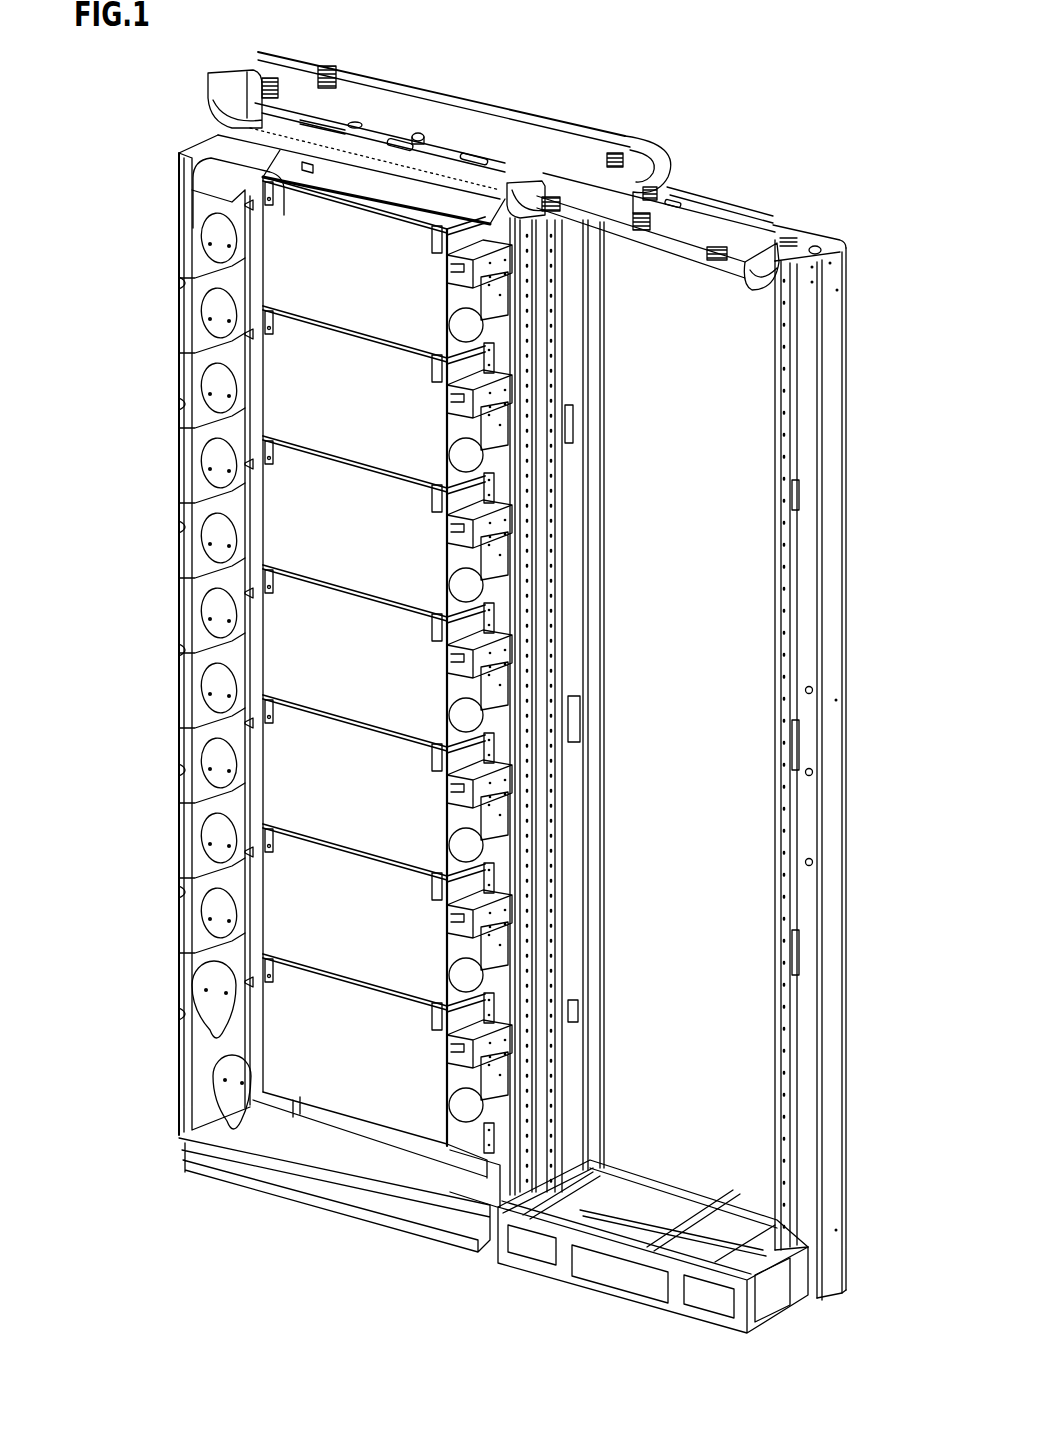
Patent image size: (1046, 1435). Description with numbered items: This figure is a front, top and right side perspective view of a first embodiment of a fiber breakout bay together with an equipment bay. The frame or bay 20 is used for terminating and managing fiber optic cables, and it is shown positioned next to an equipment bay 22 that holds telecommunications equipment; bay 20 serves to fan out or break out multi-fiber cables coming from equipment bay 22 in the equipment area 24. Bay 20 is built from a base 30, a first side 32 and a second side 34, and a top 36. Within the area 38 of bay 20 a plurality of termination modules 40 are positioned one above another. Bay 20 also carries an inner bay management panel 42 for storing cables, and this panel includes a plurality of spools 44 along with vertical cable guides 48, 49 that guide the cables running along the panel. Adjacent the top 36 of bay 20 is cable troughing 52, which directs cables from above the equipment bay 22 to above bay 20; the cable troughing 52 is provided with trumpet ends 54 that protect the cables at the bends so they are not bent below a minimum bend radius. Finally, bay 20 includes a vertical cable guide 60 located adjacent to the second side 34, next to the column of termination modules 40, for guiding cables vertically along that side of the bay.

The bay 20 is at (340, 173).
The equipment bay 22 is at (835, 540).
The equipment area 24 is at (690, 566).
The base 30 is at (297, 1195).
The first side 32 is at (250, 122).
The second side 34 is at (497, 199).
The top 36 is at (380, 113).
The area 38 is at (287, 1018).
The termination modules 40 is at (350, 282).
The inner bay management panel 42 is at (178, 330).
The spools 44 is at (211, 678).
The vertical cable guide 48 is at (180, 741).
The vertical cable guide 49 is at (253, 818).
The cable troughing 52 is at (447, 88).
The trumpet ends 54 is at (222, 78).
The vertical cable guide 60 is at (500, 388).